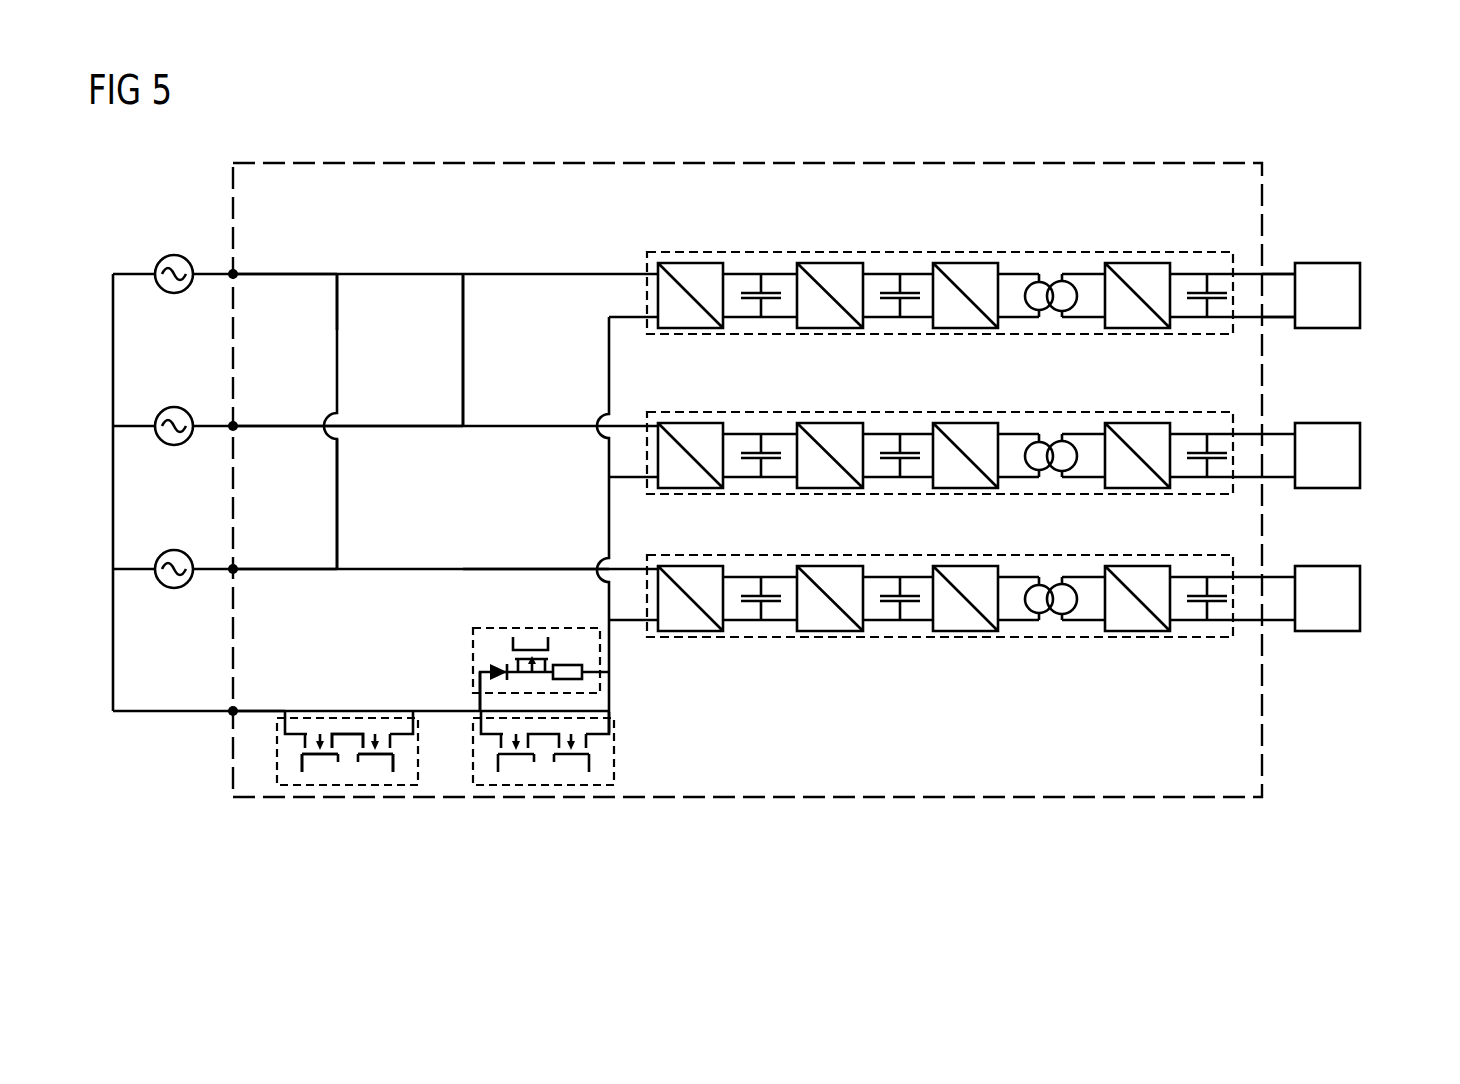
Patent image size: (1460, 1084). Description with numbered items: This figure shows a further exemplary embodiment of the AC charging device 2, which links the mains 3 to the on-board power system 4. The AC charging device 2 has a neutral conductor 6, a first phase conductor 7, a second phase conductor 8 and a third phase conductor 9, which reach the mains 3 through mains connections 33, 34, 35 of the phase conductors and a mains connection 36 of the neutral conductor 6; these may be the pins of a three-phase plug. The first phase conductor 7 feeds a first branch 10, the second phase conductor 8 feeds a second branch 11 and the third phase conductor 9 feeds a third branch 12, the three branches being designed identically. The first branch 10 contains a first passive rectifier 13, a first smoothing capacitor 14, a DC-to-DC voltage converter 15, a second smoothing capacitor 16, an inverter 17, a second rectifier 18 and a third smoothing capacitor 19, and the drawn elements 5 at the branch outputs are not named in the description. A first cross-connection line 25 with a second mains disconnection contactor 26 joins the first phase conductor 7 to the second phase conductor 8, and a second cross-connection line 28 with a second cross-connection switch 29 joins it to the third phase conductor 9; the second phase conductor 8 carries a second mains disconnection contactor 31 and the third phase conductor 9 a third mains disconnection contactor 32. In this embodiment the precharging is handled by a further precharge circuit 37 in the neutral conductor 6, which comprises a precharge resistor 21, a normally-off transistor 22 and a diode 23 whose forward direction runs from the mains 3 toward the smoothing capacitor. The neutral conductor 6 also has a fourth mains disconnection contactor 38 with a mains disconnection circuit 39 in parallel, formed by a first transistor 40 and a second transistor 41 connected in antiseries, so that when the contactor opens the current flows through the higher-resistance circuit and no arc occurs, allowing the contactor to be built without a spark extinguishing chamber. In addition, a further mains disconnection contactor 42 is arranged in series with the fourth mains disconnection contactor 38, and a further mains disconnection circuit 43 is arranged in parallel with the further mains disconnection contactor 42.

The AC charging device 2 is at (808, 162).
The mains 3 is at (170, 255).
The on-board power system 4 is at (1282, 265).
The load 5 is at (1360, 296).
The neutral conductor 6 is at (254, 705).
The first phase conductor 7 is at (300, 270).
The second phase conductor 8 is at (294, 424).
The third phase conductor 9 is at (575, 568).
The first branch 10 is at (1049, 252).
The second branch 11 is at (1207, 410).
The third branch 12 is at (1145, 637).
The first passive rectifier 13 is at (690, 262).
The first smoothing capacitor 14 is at (761, 290).
The DC-to-DC voltage converter 15 is at (830, 262).
The second smoothing capacitor 16 is at (900, 290).
The inverter 17 is at (970, 262).
The second rectifier 18 is at (1138, 262).
The third smoothing capacitor 19 is at (1207, 290).
The precharge resistor 21 is at (573, 665).
The normally-off transistor 22 is at (530, 652).
The diode 23 is at (500, 665).
The first cross-connection line 25 is at (463, 328).
The second mains disconnection contactor 26 is at (463, 360).
The second cross-connection line 28 is at (340, 290).
The second cross-connection switch 29 is at (337, 503).
The second mains disconnection contactor 31 is at (430, 420).
The third mains disconnection contactor 32 is at (300, 565).
The mains connection 33 is at (238, 268).
The mains connection 34 is at (238, 420).
The mains connection 35 is at (233, 562).
The mains connection 36 is at (233, 716).
The further precharge circuit 37 is at (610, 660).
The fourth mains disconnection contactor 38 is at (543, 703).
The mains disconnection circuit 39 is at (600, 765).
The first transistor 40 is at (320, 755).
The second transistor 41 is at (376, 755).
The further mains disconnection contactor 42 is at (355, 702).
The further mains disconnection circuit 43 is at (346, 786).